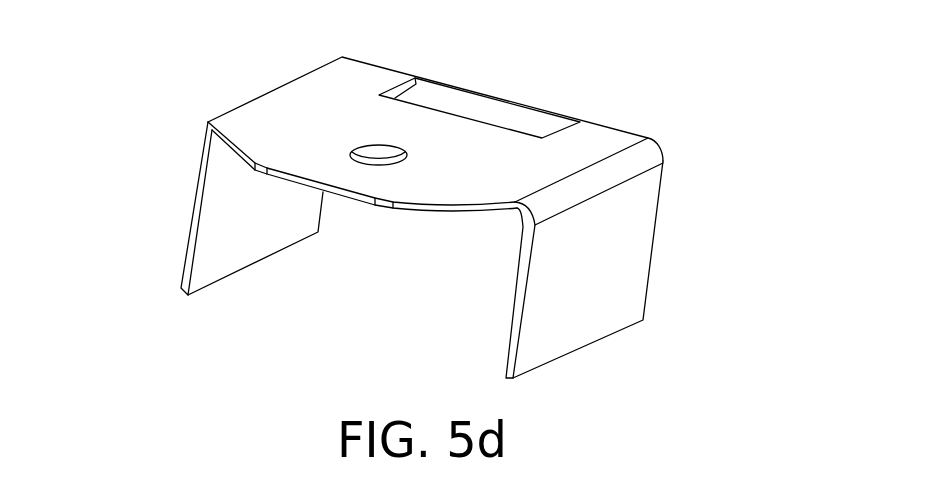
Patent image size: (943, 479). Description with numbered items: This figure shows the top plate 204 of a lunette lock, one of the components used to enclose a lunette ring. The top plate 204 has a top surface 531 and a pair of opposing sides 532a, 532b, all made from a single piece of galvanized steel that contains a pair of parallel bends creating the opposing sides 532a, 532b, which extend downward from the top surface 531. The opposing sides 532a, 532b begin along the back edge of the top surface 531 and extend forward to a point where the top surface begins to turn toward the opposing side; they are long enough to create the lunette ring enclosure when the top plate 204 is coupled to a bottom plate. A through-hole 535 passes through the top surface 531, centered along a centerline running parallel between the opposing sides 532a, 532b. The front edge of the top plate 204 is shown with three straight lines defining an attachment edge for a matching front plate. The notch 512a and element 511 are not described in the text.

The top plate 204 is at (183, 108).
The body 511 is at (423, 247).
The slot 512a is at (507, 103).
The top surface 531 is at (603, 138).
The opposing side 532a is at (192, 223).
The opposing side 532b is at (640, 250).
The through-hole 535 is at (372, 158).